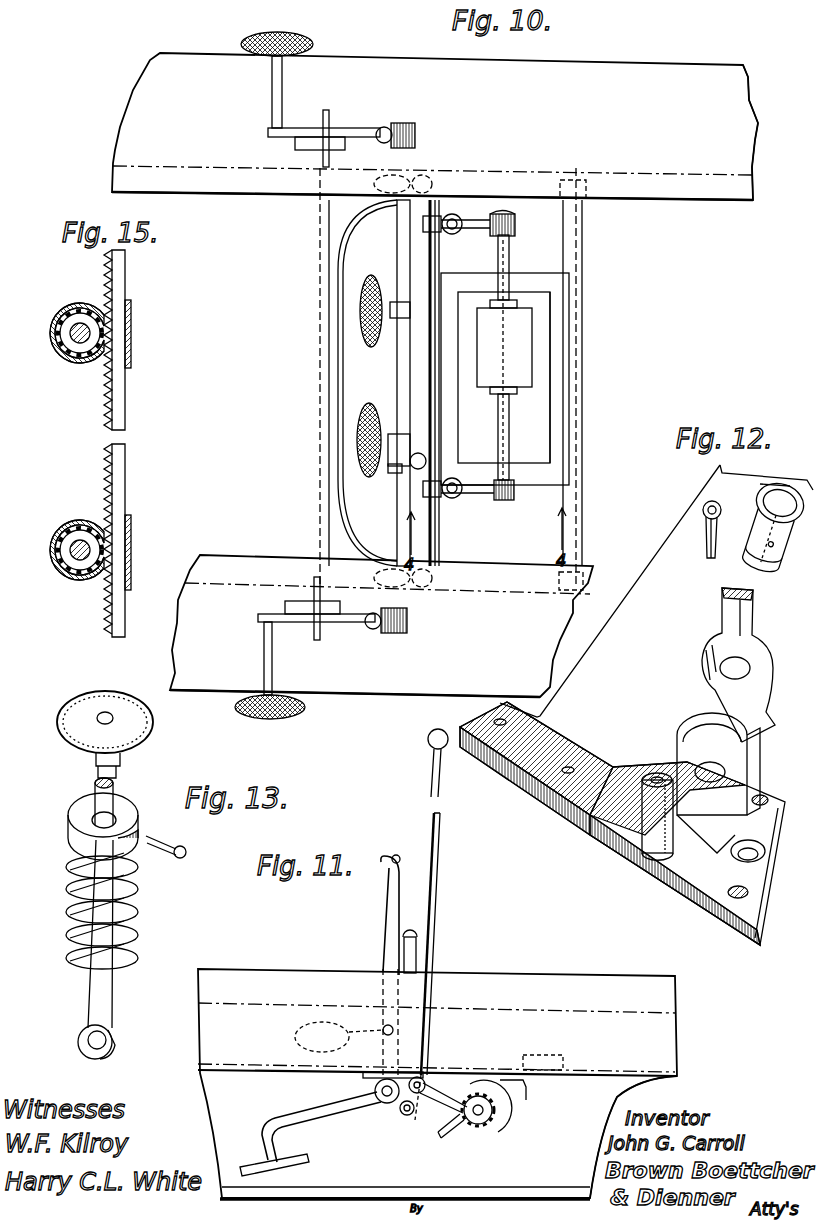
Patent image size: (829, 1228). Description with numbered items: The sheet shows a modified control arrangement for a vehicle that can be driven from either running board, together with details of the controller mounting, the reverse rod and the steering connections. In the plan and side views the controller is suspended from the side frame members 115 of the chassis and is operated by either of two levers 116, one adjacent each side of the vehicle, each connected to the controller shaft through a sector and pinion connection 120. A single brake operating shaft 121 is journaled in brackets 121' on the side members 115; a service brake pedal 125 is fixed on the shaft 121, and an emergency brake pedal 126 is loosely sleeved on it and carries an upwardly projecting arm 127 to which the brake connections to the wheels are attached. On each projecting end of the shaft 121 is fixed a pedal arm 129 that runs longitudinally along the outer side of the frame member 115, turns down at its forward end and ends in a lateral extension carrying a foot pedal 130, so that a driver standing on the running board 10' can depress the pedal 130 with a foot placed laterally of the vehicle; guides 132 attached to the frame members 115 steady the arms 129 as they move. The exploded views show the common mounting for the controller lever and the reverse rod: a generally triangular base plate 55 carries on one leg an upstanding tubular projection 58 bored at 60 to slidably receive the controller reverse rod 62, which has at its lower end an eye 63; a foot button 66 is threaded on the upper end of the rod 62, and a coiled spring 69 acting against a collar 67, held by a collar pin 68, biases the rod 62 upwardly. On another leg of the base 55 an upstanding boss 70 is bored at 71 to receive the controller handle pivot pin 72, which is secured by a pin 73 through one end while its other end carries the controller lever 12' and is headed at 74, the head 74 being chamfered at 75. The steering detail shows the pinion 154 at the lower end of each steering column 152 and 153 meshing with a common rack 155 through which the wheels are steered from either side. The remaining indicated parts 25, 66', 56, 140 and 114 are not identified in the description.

In FIG. 10, the foot pedal 130 is at (290, 36).
In FIG. 11, the foot pedal 130 is at (306, 1156).
In FIG. 10, the guides 132 is at (330, 136).
In FIG. 10, the pedal arm 129 is at (390, 128).
In FIG. 10, the brackets 121' is at (453, 374).
In FIG. 10, the running board 10' is at (706, 109).
In FIG. 11, the running board 10' is at (601, 1137).
In FIG. 10, the side frame members 115 is at (682, 200).
In FIG. 11, the side frame members 115 is at (580, 1000).
In FIG. 10, the sector and pinion connection 120 is at (500, 210).
In FIG. 11, the sector and pinion connection 120 is at (472, 1125).
In FIG. 10, the levers 116 is at (452, 232).
In FIG. 11, the levers 116 is at (430, 866).
In FIG. 10, the brake operating shaft 121 is at (374, 383).
In FIG. 11, the brake operating shaft 121 is at (386, 1110).
In FIG. 10, the service brake pedal 125 is at (360, 324).
In FIG. 10, the motor frame 25 is at (545, 368).
In FIG. 10, the emergency brake pedal 126 is at (357, 420).
In FIG. 11, the emergency brake pedal 126 is at (386, 866).
In FIG. 10, the pin 66' is at (451, 442).
In FIG. 11, the pin 66' is at (443, 1019).
In FIG. 10, the upwardly projecting arm 127 is at (392, 470).
In FIG. 11, the upwardly projecting arm 127 is at (344, 1037).
In FIG. 15, the pinion 154 is at (68, 312).
In FIG. 15, the column 152 is at (56, 360).
In FIG. 15, the rack 155 is at (128, 397).
In FIG. 15, the column 153 is at (56, 532).
In FIG. 13, the foot button 66 is at (94, 724).
In FIG. 13, the controller reverse rod 62 is at (112, 800).
In FIG. 13, the collar 67 is at (70, 816).
In FIG. 13, the collar pin 68 is at (172, 840).
In FIG. 13, the coiled spring 69 is at (62, 916).
In FIG. 13, the eye 63 is at (112, 1040).
In FIG. 12, the chamfer 75 is at (762, 490).
In FIG. 12, the pin 73 is at (706, 548).
In FIG. 12, the head 74 is at (760, 508).
In FIG. 12, the controller handle pivot pin 72 is at (786, 546).
In FIG. 12, the controller lever 12' is at (760, 665).
In FIG. 12, the bore 71 is at (702, 765).
In FIG. 12, the bore 60 is at (656, 775).
In FIG. 12, the boss 70 is at (750, 748).
In FIG. 12, the screw hole 56 is at (760, 800).
In FIG. 12, the tubular projection 58 is at (612, 840).
In FIG. 12, the base plate 55 is at (690, 875).
In FIG. 11, the ball handle 140 is at (455, 760).
In FIG. 11, the gear housing 114 is at (508, 1095).